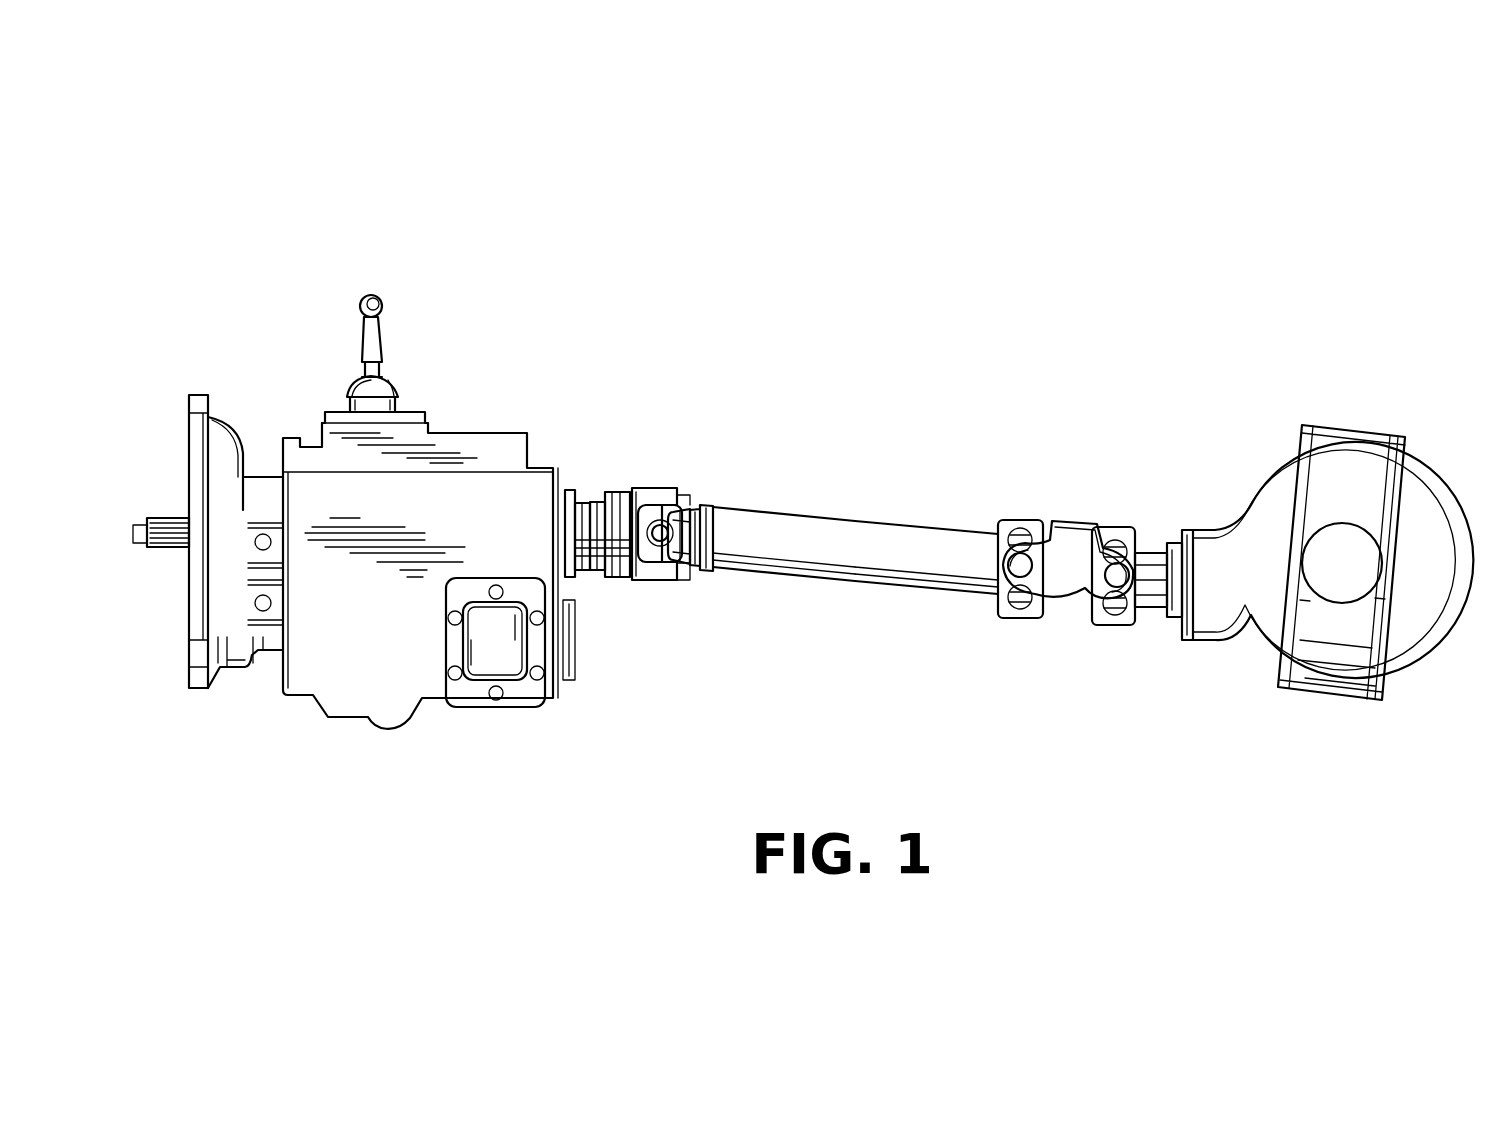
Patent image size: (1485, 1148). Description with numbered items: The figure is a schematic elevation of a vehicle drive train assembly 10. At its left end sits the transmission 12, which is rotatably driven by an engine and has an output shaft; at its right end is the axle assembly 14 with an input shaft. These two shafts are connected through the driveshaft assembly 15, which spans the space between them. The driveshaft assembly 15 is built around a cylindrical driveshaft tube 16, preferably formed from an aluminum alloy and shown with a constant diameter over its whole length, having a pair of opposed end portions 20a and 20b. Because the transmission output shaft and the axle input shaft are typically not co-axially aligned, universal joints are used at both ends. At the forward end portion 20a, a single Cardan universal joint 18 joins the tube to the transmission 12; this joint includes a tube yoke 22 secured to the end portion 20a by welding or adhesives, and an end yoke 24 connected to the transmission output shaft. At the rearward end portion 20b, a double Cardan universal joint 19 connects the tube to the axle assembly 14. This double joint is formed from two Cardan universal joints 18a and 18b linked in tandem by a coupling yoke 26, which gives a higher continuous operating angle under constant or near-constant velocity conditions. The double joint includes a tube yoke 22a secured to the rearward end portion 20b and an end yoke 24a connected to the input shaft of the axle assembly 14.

The vehicle drive train assembly 10 is at (418, 225).
The transmission 12 is at (362, 703).
The axle assembly 14 is at (1323, 688).
The driveshaft assembly 15 is at (1160, 402).
The driveshaft tube 16 is at (870, 568).
The Cardan universal joint 18 is at (647, 482).
The Cardan universal joint 18a is at (1005, 508).
The Cardan universal joint 18b is at (1142, 643).
The double Cardan universal joint 19 is at (992, 652).
The end portion 20a is at (727, 575).
The end portion 20b is at (978, 597).
The tube yoke 22 is at (675, 515).
The tube yoke 22a is at (1022, 518).
The end yoke 24 is at (655, 577).
The end yoke 24a is at (1140, 528).
The coupling yoke 26 is at (1080, 518).